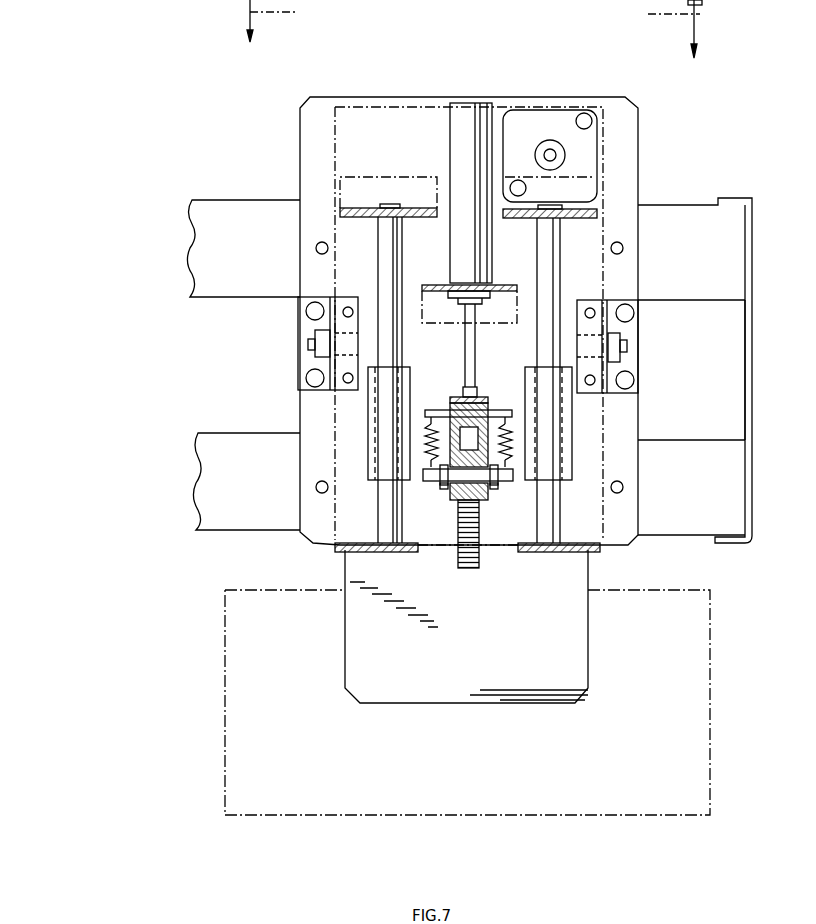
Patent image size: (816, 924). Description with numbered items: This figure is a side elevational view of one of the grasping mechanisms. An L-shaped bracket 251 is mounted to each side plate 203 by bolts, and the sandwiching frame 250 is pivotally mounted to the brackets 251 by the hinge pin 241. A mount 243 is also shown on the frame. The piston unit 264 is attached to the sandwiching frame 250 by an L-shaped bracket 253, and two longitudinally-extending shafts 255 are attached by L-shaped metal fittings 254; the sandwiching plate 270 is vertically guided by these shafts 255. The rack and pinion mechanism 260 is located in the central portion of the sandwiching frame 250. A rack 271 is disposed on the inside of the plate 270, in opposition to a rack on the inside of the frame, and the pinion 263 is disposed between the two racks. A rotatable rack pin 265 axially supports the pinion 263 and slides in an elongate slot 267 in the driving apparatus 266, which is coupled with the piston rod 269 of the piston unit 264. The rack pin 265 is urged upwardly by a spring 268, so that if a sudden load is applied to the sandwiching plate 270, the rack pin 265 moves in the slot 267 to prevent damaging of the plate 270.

The side plate 203 is at (655, 86).
The hinge pin 241 is at (312, 345).
The motor mount 243 is at (552, 122).
The sandwiching frame 250 is at (338, 118).
The L-shaped bracket 251 is at (303, 320).
The L-shaped bracket 253 is at (432, 285).
The L-shaped metal fitting 254 is at (368, 207).
The longitudinally-extending shaft 255 is at (383, 278).
The rack and pinion mechanism 260 is at (504, 568).
The pinion 263 is at (456, 487).
The piston unit 264 is at (475, 118).
The rack pin 265 is at (535, 475).
The driving apparatus 266 is at (455, 397).
The elongate slot 267 is at (452, 503).
The spring 268 is at (428, 440).
The piston rod 269 is at (507, 336).
The sandwiching plate 270 is at (483, 653).
The rack 271 is at (465, 568).